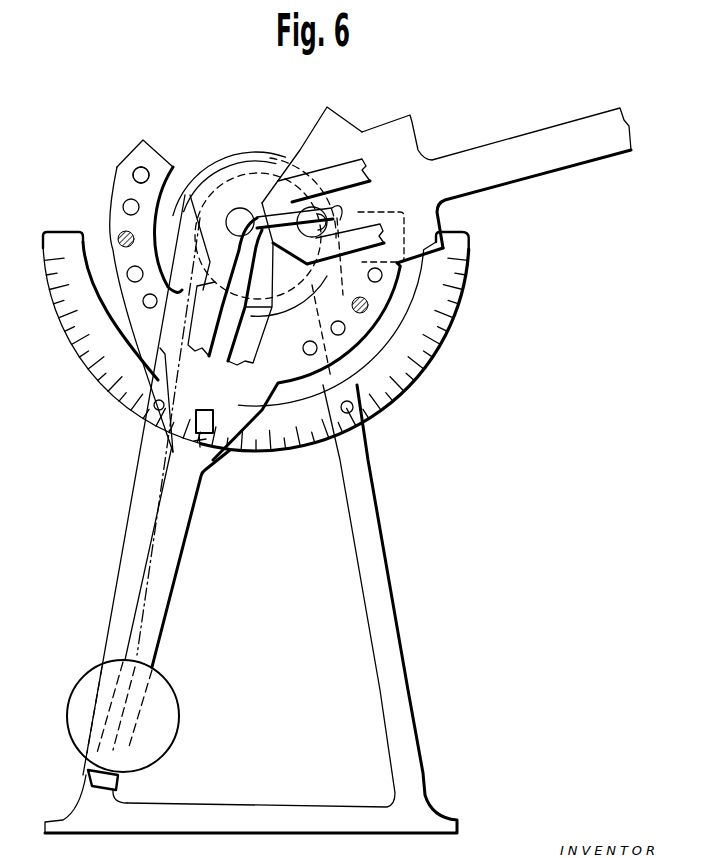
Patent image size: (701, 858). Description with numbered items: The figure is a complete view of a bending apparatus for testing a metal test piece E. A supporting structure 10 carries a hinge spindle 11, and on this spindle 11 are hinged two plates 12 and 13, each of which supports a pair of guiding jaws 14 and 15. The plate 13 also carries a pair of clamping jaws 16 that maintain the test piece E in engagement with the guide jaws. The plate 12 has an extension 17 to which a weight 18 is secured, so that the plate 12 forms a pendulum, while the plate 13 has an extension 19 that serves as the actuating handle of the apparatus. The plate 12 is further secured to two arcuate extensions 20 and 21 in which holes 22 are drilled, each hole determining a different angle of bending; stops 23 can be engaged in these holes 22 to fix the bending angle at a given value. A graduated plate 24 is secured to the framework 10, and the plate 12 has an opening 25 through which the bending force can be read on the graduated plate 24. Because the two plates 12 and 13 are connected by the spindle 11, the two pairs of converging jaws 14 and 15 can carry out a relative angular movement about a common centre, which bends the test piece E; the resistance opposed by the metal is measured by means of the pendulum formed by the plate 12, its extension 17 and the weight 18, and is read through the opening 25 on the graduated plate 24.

The supporting structure 10 is at (251, 514).
The hinge spindle 11 is at (276, 222).
The plate 12 is at (240, 403).
The plate 13 is at (312, 175).
The guiding jaws 14 is at (219, 326).
The guiding jaws 15 is at (328, 211).
The clamping jaws 16 is at (316, 201).
The extension 17 is at (158, 618).
The weight 18 is at (123, 716).
The extension 19 is at (496, 178).
The arcuate extension 20 is at (141, 146).
The arcuate extension 21 is at (366, 315).
The holes 22 is at (136, 170).
The stops 23 is at (121, 233).
The graduated plate 24 is at (256, 341).
The opening 25 is at (207, 407).
The test piece E is at (243, 240).